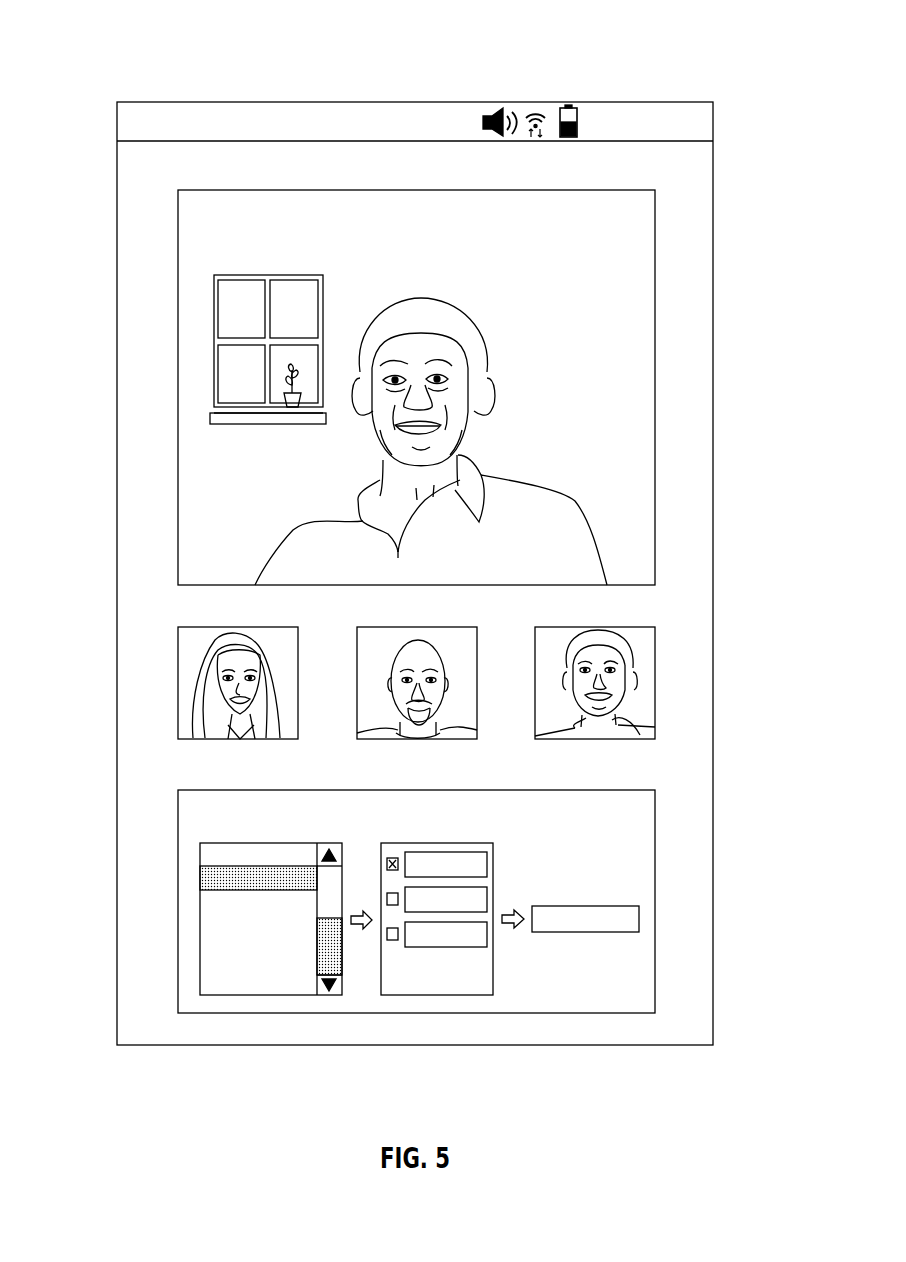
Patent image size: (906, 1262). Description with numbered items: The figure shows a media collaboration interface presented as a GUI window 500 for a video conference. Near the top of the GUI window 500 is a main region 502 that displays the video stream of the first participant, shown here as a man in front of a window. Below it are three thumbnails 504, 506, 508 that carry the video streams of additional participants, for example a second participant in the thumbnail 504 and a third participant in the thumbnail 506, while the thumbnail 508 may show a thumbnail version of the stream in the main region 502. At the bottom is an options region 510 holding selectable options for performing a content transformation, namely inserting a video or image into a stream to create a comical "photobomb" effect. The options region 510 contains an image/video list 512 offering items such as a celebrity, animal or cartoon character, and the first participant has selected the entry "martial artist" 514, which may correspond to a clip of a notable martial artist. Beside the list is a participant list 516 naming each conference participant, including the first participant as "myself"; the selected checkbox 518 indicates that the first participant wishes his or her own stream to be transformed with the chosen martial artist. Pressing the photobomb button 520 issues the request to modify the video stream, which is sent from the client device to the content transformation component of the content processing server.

The GUI window 500 is at (808, 35).
The main region 502 is at (187, 343).
The thumbnail 504 is at (195, 670).
The thumbnail 506 is at (373, 670).
The thumbnail 508 is at (550, 670).
The options region 510 is at (176, 805).
The image/video list 512 is at (196, 970).
The selected photobomb list item 514 is at (200, 873).
The participant list 516 is at (496, 953).
The checkbox 518 is at (385, 867).
The photobomb button 520 is at (588, 905).